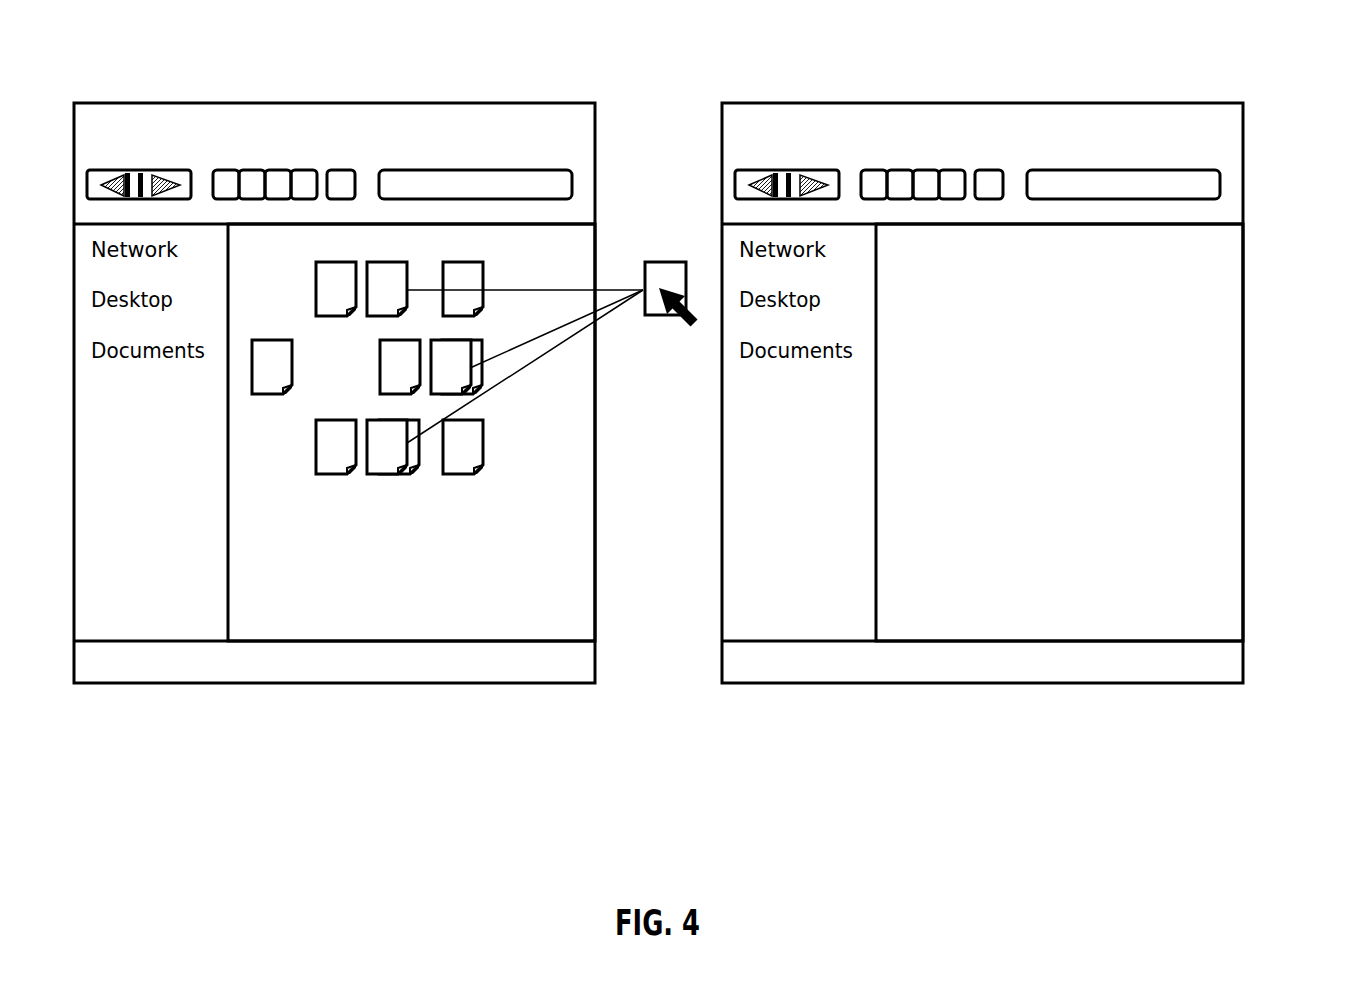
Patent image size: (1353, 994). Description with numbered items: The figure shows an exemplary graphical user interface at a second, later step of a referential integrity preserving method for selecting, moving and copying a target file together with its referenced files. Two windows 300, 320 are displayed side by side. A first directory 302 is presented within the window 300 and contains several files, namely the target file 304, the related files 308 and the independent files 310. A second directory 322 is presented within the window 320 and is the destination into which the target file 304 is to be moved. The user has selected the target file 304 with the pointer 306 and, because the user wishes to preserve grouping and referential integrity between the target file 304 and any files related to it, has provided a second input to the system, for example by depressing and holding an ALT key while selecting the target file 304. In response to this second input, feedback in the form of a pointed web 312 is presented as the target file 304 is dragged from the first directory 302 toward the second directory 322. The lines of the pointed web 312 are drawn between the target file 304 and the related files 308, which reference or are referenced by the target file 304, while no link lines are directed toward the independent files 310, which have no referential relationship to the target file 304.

The window 300 is at (383, 101).
The first directory 302 is at (565, 556).
The target file 304 is at (648, 262).
The pointer 306 is at (687, 328).
The files 308 is at (387, 303).
The files 310 is at (415, 475).
The pointed web 312 is at (566, 291).
The window 320 is at (1031, 101).
The second directory 322 is at (1213, 556).